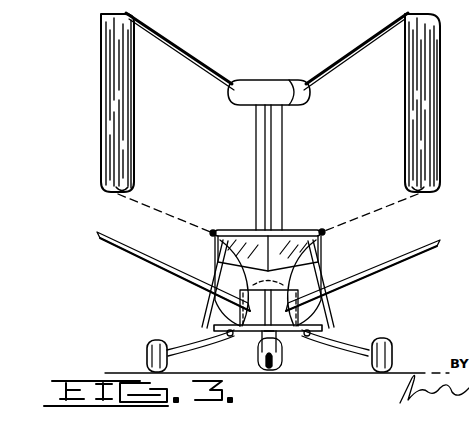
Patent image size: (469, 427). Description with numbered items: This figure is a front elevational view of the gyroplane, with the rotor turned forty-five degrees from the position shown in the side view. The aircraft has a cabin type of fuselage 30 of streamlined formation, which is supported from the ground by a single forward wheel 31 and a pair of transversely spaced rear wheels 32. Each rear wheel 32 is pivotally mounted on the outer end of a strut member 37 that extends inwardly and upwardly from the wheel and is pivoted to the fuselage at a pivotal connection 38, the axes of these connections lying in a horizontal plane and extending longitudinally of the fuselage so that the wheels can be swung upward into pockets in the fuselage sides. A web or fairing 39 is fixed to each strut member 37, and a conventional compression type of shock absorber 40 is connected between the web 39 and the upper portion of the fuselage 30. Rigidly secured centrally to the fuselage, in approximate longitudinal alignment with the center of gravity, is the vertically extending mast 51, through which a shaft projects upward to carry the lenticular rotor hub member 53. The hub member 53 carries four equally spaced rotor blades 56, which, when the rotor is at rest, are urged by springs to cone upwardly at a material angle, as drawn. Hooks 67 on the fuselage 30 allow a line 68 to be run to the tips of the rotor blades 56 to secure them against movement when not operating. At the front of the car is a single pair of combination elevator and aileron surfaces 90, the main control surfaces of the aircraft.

The fuselage 30 is at (289, 228).
The forward wheel 31 is at (268, 370).
The rear wheels 32 is at (146, 352).
The strut member 37 is at (222, 344).
The pivotal connection 38 is at (226, 336).
The web or fairing 39 is at (192, 338).
The shock absorber 40 is at (203, 270).
The mast 51 is at (286, 94).
The rotor hub member 53 is at (258, 78).
The rotor blades 56 is at (171, 28).
The hooks 67 is at (214, 230).
The line 68 is at (158, 208).
The combination elevator and aileron surfaces 90 is at (138, 258).